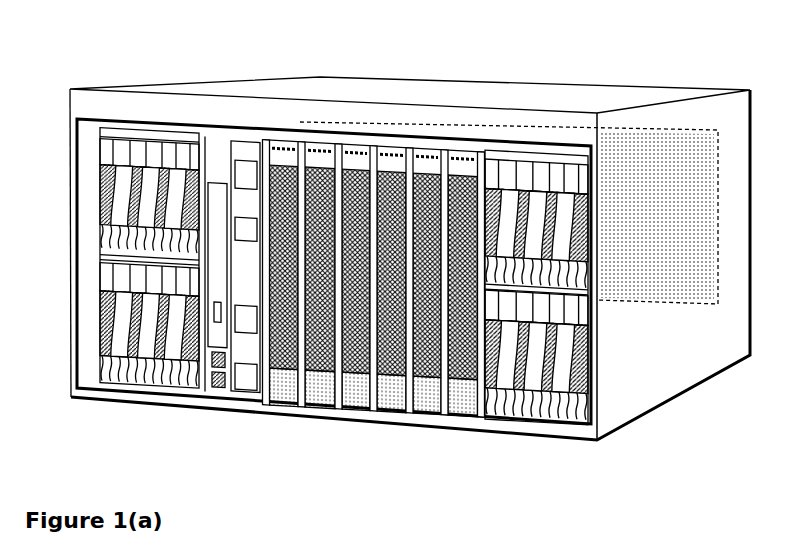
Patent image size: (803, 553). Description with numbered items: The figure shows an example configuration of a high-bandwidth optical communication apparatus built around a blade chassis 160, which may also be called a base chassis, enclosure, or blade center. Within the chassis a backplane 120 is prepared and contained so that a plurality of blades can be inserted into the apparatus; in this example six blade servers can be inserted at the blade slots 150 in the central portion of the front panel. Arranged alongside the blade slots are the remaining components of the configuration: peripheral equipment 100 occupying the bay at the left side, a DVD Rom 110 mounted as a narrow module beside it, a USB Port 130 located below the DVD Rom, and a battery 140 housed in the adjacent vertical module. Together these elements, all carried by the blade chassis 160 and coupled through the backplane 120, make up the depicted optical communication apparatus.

The peripheral equipment 100 is at (155, 160).
The DVD Rom 110 is at (217, 194).
The backplane 120 is at (637, 120).
The USB Port 130 is at (215, 386).
The battery 140 is at (248, 352).
The blade server insertion slots 150 is at (362, 362).
The blade chassis 160 is at (652, 345).